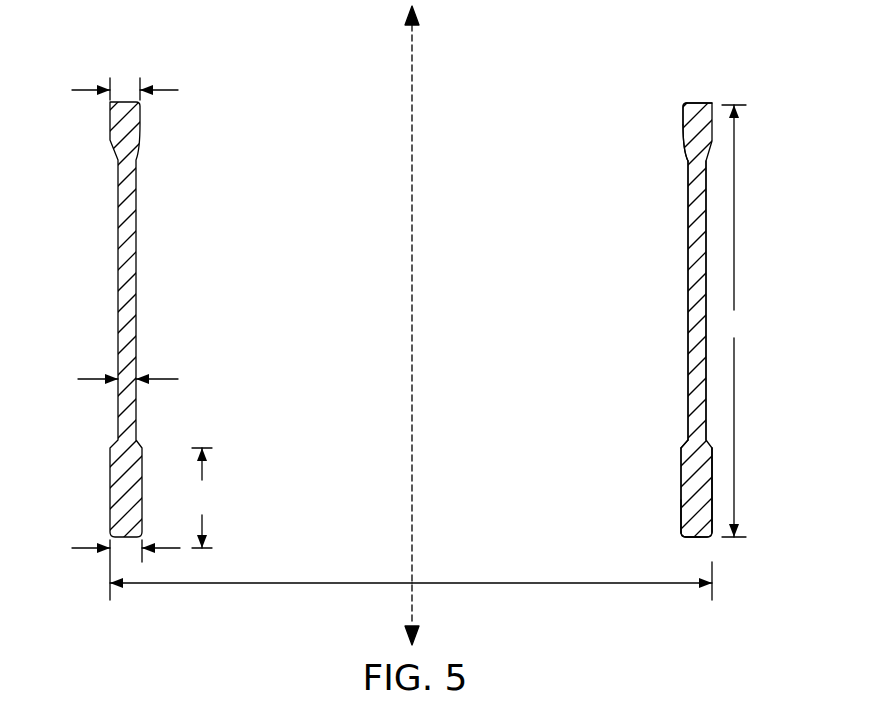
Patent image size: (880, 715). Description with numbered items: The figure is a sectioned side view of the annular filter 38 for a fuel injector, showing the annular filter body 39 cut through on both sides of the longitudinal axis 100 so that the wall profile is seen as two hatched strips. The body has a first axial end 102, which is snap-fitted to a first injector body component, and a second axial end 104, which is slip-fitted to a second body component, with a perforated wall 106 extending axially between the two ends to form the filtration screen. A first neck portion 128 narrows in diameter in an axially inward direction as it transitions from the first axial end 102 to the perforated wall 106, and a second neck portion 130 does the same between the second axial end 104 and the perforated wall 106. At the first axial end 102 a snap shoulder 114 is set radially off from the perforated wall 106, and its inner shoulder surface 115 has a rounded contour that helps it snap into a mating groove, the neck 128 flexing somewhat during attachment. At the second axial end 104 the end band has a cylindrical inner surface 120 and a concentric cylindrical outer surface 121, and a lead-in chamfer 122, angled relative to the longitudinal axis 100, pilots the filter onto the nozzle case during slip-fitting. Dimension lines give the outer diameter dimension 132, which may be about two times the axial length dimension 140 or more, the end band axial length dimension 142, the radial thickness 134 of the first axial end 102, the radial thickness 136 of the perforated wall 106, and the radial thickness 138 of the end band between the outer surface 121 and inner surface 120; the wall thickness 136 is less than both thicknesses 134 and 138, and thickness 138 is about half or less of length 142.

The annular filter 38 is at (683, 293).
The annular filter body 39 is at (692, 103).
The longitudinal axis 100 is at (413, 56).
The first axial end 102 is at (662, 109).
The second axial end 104 is at (662, 497).
The perforated wall 106 is at (688, 280).
The snap shoulder 114 is at (683, 118).
The inner shoulder surface 115 is at (137, 119).
The inner surface 120 is at (681, 512).
The outer surface 121 is at (712, 496).
The lead-in chamfer 122 is at (683, 534).
The first neck portion 128 is at (692, 150).
The second neck portion 130 is at (688, 440).
The outer diameter dimension 132 is at (428, 582).
The radial thickness of first axial end 134 is at (126, 87).
The radial thickness of perforated wall 136 is at (150, 376).
The radial thickness of end band 138 is at (126, 555).
The axial length dimension 140 is at (734, 321).
The axial length dimension of end band 142 is at (202, 498).